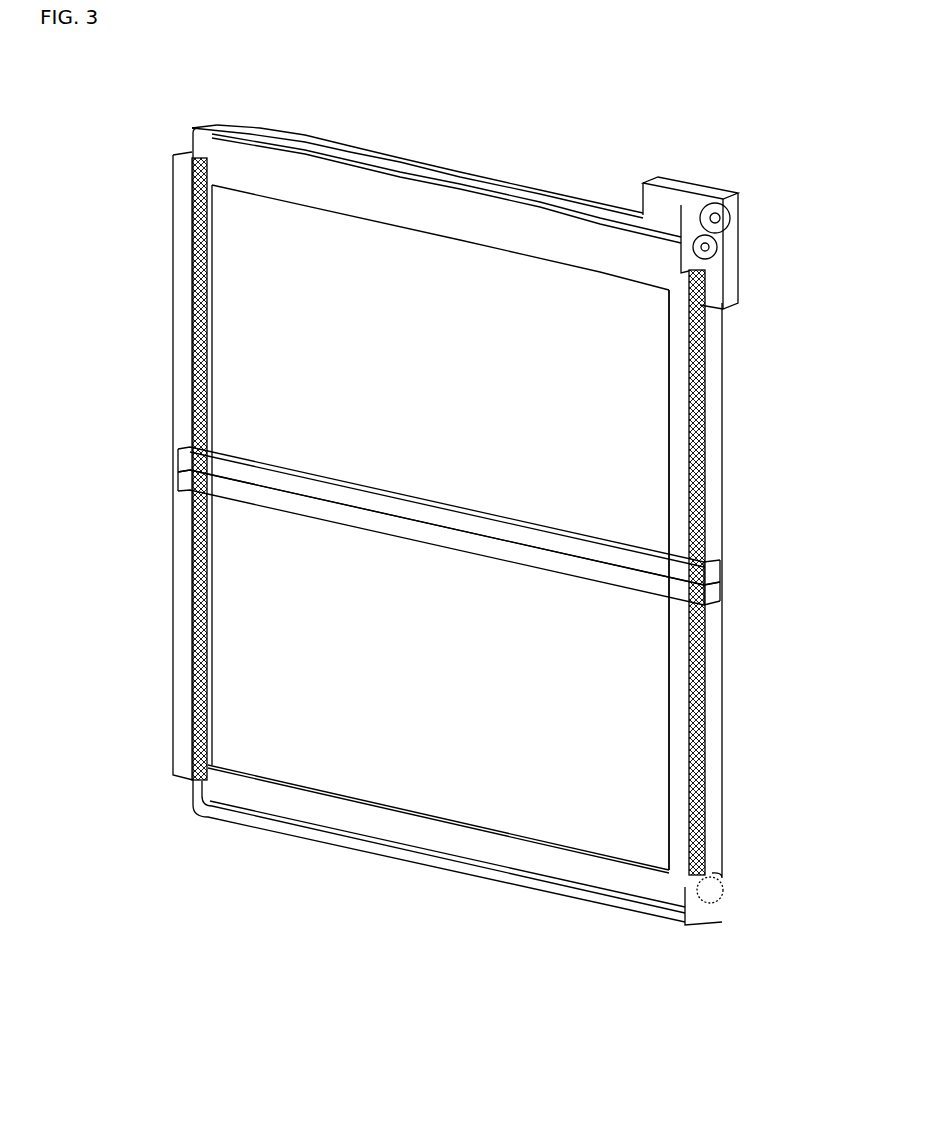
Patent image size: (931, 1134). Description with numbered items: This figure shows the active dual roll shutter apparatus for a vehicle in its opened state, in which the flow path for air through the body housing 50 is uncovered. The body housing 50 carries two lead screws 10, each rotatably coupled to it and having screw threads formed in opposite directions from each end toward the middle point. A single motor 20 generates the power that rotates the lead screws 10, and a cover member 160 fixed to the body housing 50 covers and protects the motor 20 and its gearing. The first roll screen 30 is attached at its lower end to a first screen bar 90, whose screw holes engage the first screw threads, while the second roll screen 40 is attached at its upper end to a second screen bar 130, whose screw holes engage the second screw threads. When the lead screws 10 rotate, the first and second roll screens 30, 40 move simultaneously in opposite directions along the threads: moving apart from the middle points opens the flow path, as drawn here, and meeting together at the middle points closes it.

The lead screw 10 is at (195, 660).
The motor 20 is at (670, 213).
The first roll screen 30 is at (257, 303).
The second roll screen 40 is at (605, 726).
The body housing 50 is at (413, 213).
The first screen bar 90 is at (257, 463).
The second screen bar 130 is at (340, 517).
The cover member 160 is at (717, 190).